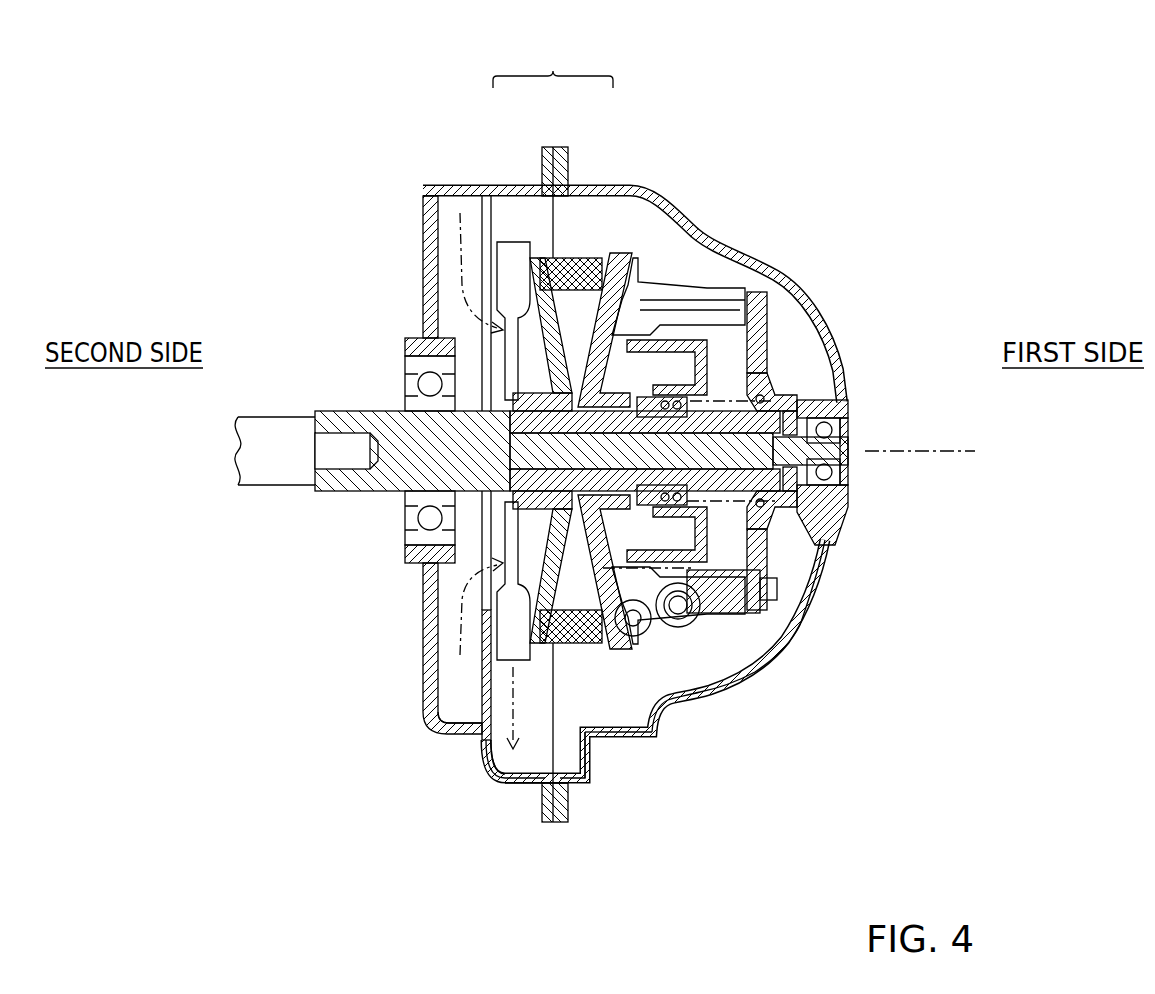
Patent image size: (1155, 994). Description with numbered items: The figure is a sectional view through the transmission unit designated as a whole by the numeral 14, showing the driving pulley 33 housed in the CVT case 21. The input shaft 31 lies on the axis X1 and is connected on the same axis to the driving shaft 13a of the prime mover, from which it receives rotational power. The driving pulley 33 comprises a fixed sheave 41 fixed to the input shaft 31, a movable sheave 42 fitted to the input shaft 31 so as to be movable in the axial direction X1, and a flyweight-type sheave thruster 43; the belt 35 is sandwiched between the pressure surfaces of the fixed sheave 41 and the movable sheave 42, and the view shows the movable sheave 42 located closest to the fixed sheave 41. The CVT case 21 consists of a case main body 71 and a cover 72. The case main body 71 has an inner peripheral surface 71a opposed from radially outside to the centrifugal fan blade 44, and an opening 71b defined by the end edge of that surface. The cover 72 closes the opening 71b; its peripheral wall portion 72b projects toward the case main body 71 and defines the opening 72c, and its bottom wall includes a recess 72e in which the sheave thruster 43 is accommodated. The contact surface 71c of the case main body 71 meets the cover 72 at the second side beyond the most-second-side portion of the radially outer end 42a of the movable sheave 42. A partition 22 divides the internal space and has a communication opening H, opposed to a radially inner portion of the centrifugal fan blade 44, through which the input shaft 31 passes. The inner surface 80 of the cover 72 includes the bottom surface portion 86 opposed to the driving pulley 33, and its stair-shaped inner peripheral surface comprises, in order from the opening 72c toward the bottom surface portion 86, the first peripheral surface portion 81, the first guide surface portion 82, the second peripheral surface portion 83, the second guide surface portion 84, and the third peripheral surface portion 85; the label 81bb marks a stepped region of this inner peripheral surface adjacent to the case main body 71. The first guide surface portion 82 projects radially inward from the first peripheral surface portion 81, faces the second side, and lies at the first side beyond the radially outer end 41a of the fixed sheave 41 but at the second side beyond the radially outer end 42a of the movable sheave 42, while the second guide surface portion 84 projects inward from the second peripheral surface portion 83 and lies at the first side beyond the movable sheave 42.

The centrifugal clutch device 14 is at (781, 104).
The CVT case 21 is at (553, 61).
The driving pulley 33 is at (484, 194).
The fixed sheave 41 is at (503, 185).
The case main body 71 is at (513, 228).
The cover 72 is at (585, 253).
The opening 71b is at (556, 230).
The belt 35 is at (612, 252).
The movable sheave 42 is at (631, 250).
The sheave thruster 43 is at (752, 286).
The centrifugal fan blade 44 is at (510, 265).
The input shaft 31 is at (372, 411).
The recess 72e is at (835, 331).
The driving shaft 13a is at (280, 487).
The communication opening H is at (478, 561).
The radially outer end 41a is at (530, 667).
The partition 22 is at (482, 698).
The bottom wall inner surface 81bb is at (588, 726).
The bottom surface portion 86 is at (803, 546).
The opening 72c is at (507, 741).
The inner peripheral surface 71a is at (524, 770).
The peripheral wall portion 72b is at (538, 802).
The contact surface 71c is at (566, 798).
The first peripheral surface portion 81 is at (572, 791).
The first guide surface portion 82 is at (582, 778).
The second peripheral surface portion 83 is at (578, 713).
The second guide surface portion 84 is at (653, 708).
The third peripheral surface portion 85 is at (718, 669).
The inner surface 80 is at (784, 632).
The radially outer end 42a is at (648, 739).
The axis X1 is at (938, 452).